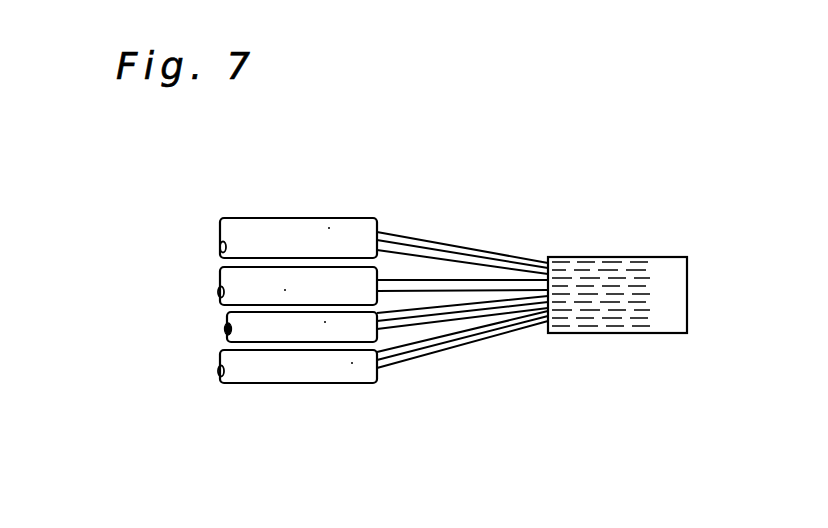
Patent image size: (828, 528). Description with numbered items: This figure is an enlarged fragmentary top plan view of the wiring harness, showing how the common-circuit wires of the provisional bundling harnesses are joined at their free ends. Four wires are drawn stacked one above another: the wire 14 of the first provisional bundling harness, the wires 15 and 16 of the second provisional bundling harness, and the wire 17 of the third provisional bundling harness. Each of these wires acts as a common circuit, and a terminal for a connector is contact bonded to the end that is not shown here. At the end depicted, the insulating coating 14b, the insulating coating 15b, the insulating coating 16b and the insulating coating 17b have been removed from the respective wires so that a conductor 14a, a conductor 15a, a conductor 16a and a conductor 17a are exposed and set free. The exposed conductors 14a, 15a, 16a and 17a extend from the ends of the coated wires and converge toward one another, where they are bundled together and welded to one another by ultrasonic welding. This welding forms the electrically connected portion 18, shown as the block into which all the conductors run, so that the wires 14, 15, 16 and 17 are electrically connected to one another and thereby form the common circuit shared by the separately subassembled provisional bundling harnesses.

The wire 14 is at (268, 218).
The conductor 14a is at (397, 231).
The insulating coating 14b is at (328, 228).
The wire 15 is at (218, 280).
The conductor 15a is at (420, 282).
The insulating coating 15b is at (285, 290).
The wire 16 is at (220, 327).
The conductor 16a is at (410, 328).
The insulating coating 16b is at (325, 322).
The wire 17 is at (218, 367).
The conductor 17a is at (397, 368).
The insulating coating 17b is at (352, 363).
The electrically connected portion 18 is at (638, 334).